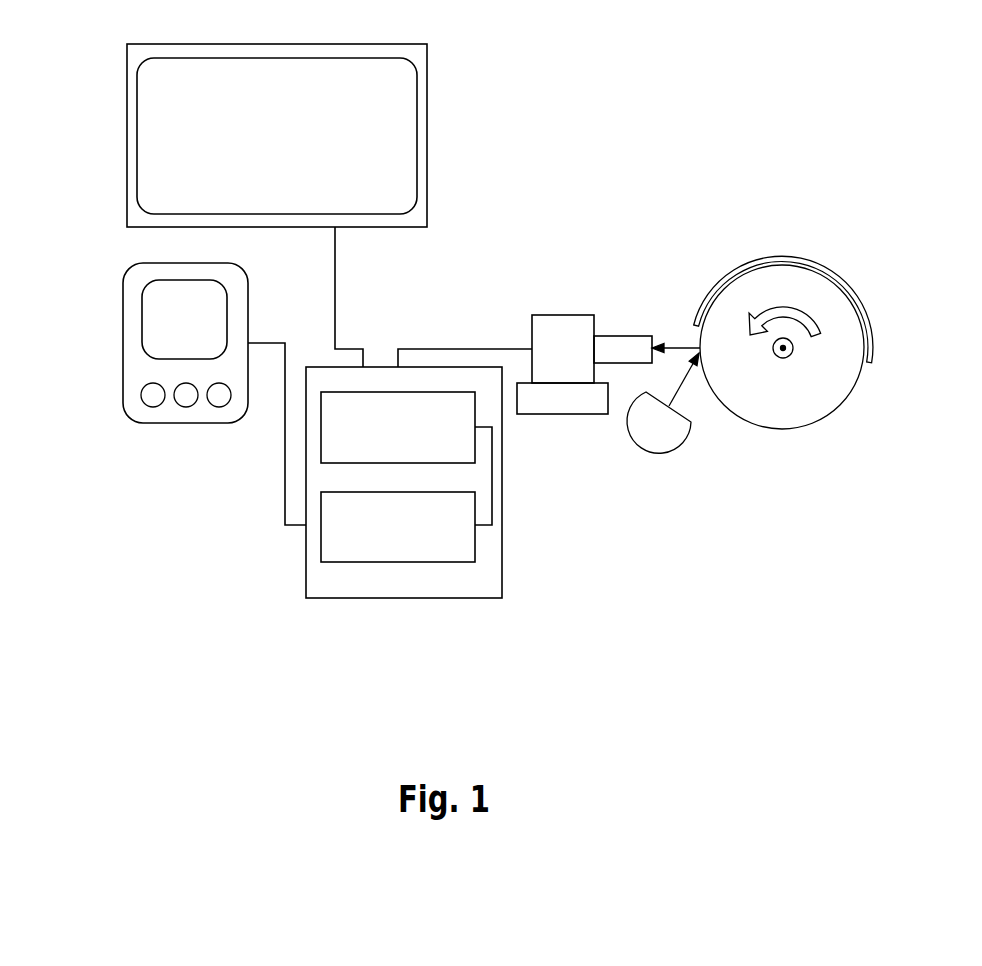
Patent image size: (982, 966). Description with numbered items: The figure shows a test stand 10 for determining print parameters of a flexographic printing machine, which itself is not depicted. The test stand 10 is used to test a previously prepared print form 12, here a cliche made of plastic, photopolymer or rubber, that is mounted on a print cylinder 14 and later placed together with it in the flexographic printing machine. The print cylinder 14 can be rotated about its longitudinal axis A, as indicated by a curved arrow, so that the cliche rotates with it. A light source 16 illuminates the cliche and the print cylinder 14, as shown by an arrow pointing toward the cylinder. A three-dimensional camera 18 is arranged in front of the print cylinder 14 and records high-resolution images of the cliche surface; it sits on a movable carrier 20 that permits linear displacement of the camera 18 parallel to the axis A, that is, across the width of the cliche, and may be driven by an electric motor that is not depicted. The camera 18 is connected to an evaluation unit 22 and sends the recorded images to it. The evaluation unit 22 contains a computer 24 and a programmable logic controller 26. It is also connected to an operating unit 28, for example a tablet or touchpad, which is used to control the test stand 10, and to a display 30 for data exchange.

The test stand 10 is at (665, 64).
The print form 12 is at (847, 291).
The print cylinder 14 is at (810, 412).
The light source 16 is at (670, 435).
The 3D camera 18 is at (575, 328).
The movable carrier 20 is at (567, 403).
The evaluation unit 22 is at (455, 599).
The computer 24 is at (345, 439).
The programmable logic controller 26 is at (345, 548).
The operating unit 28 is at (138, 377).
The display 30 is at (428, 50).